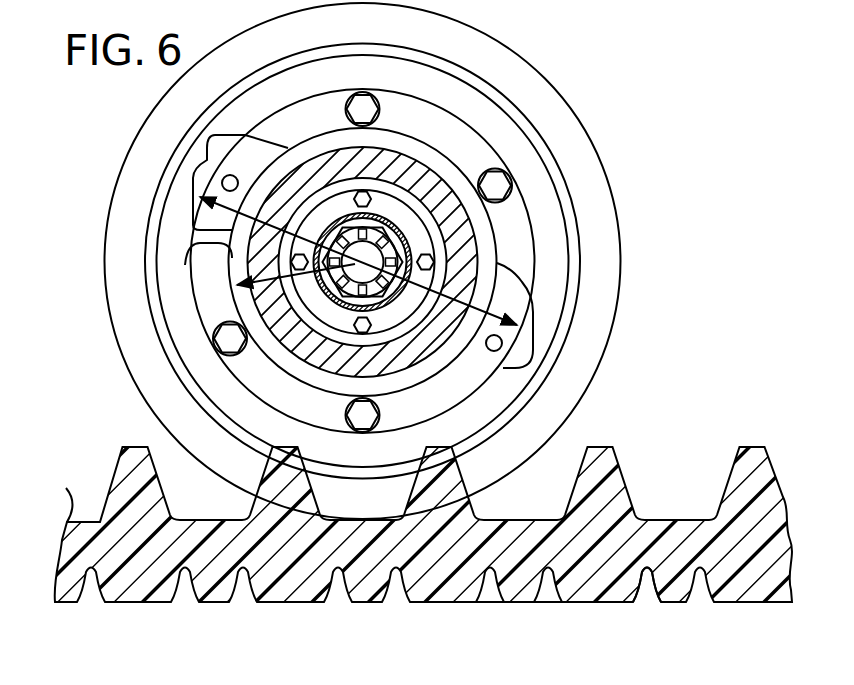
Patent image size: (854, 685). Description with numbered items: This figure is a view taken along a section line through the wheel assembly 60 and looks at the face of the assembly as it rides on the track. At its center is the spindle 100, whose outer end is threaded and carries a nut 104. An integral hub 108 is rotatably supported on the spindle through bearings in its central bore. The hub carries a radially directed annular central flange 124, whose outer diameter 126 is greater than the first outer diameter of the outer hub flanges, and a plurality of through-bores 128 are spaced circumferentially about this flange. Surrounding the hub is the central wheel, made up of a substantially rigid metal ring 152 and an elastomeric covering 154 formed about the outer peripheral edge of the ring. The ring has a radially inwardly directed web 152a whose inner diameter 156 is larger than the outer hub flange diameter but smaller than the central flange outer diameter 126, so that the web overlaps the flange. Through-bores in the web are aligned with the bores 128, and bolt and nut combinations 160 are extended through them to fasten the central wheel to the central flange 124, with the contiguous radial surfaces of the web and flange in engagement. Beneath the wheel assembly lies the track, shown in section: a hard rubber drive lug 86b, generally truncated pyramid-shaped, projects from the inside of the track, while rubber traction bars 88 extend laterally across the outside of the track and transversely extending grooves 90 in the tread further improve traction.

The wheel assembly 60 is at (115, 130).
The drive lug 86b is at (743, 467).
The traction bar 88 is at (575, 603).
The groove 90 is at (645, 590).
The spindle 100 is at (305, 333).
The nut 104 is at (350, 358).
The hub 108 is at (268, 291).
The central flange 124 is at (510, 210).
The outer diameter 126 is at (222, 228).
The through-bore 128 is at (222, 181).
The metal ring 152 is at (525, 150).
The web 152a is at (548, 252).
The elastomeric covering 154 is at (600, 215).
The inner diameter 156 is at (492, 243).
The bolt and nut combination 160 is at (495, 170).